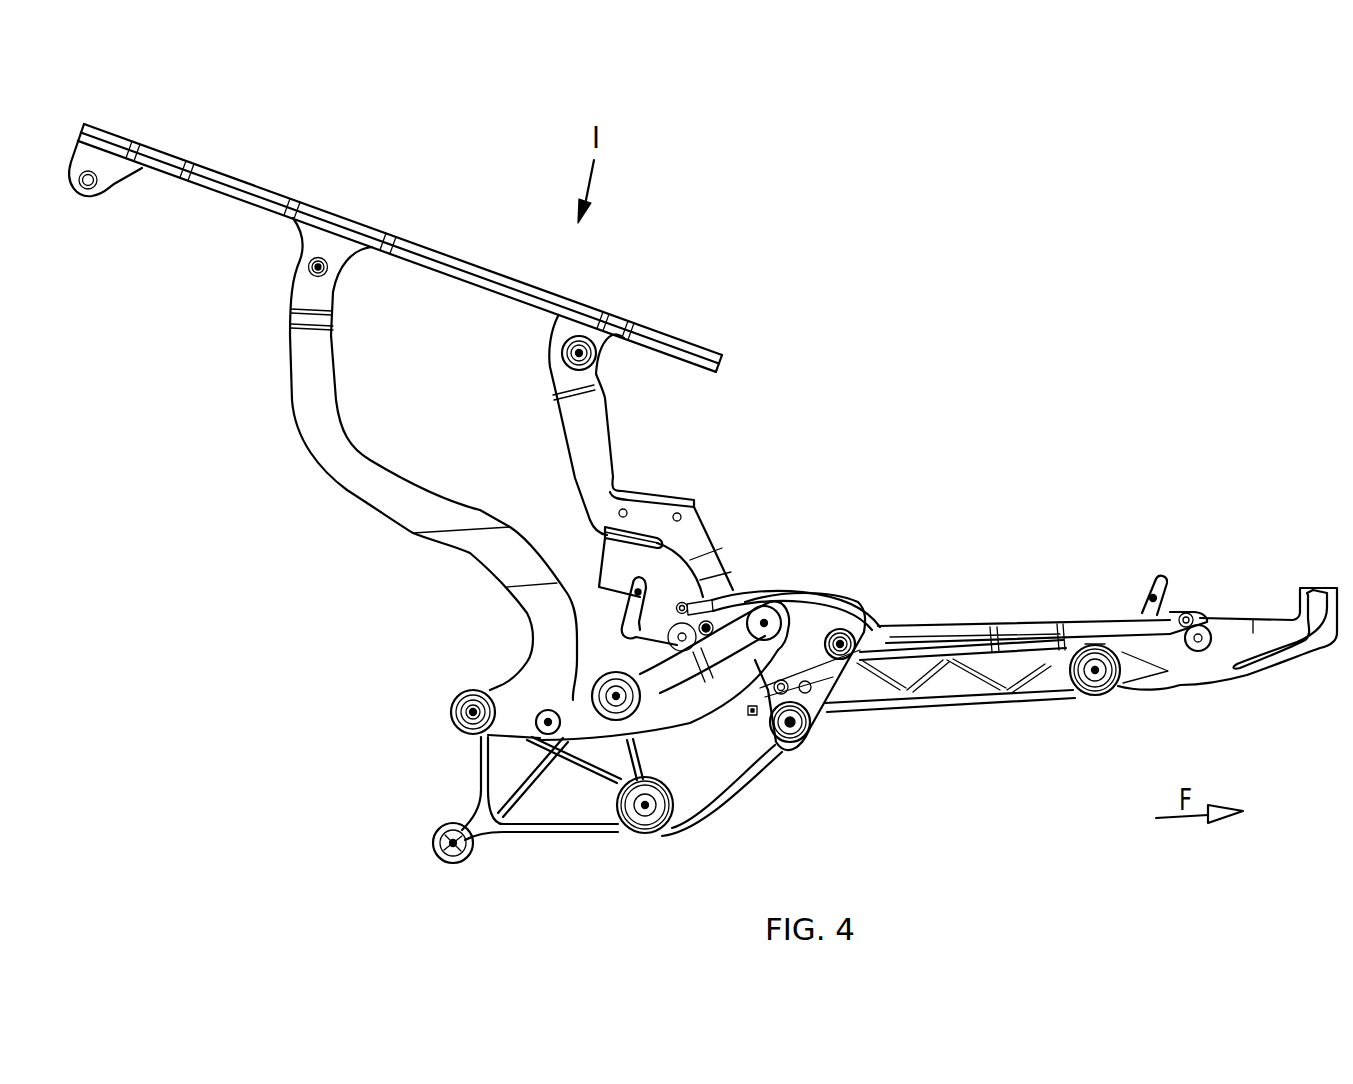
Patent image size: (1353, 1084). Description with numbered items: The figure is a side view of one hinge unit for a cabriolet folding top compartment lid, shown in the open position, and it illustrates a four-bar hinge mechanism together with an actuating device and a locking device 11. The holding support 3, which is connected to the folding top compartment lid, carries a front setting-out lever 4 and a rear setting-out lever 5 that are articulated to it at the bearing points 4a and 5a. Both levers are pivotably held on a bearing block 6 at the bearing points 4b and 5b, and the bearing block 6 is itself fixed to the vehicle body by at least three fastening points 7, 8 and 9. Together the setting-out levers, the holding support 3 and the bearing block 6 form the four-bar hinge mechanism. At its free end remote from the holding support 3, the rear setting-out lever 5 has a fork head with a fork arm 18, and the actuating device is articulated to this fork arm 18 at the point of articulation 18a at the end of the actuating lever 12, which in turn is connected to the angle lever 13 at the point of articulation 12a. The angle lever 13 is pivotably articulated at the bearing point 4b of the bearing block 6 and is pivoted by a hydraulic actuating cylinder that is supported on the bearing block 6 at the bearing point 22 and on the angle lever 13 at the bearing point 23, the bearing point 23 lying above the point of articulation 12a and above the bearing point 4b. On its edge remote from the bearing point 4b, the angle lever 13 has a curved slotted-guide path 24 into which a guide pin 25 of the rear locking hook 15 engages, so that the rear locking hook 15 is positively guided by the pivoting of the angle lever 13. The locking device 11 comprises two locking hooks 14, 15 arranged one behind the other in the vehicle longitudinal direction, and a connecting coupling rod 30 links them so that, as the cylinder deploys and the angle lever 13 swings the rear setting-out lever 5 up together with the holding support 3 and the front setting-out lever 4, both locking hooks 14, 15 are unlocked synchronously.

The holding support 3 is at (487, 270).
The front setting-out lever 4 is at (588, 453).
The bearing point 4a is at (581, 351).
The bearing point 4b is at (790, 722).
The rear setting-out lever 5 is at (343, 448).
The bearing point 5a is at (310, 272).
The bearing point 5b is at (473, 712).
The bearing block 6 is at (968, 677).
The fastening point 7 is at (1095, 670).
The fastening point 8 is at (645, 805).
The fastening point 9 is at (616, 696).
The locking device 11 is at (706, 615).
The actuating lever 12 is at (665, 716).
The point of articulation 12a is at (764, 623).
The angle lever 13 is at (808, 630).
The front locking hook 14 is at (1153, 598).
The rear locking hook 15 is at (663, 600).
The fork arm 18 is at (530, 732).
The point of articulation 18a is at (548, 722).
The bearing point 22 is at (453, 843).
The bearing point 23 is at (840, 644).
The slotted-guide path 24 is at (843, 611).
The guide pin 25 is at (708, 622).
The connecting coupling rod 30 is at (961, 628).